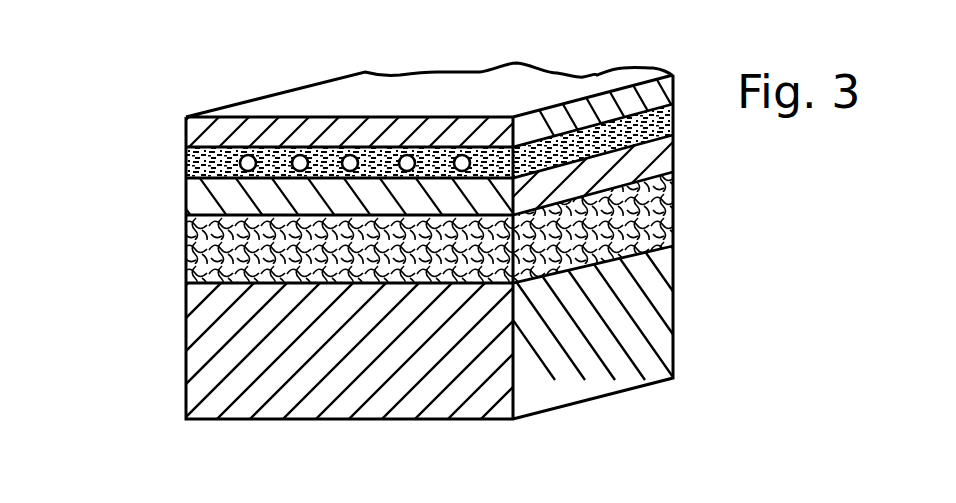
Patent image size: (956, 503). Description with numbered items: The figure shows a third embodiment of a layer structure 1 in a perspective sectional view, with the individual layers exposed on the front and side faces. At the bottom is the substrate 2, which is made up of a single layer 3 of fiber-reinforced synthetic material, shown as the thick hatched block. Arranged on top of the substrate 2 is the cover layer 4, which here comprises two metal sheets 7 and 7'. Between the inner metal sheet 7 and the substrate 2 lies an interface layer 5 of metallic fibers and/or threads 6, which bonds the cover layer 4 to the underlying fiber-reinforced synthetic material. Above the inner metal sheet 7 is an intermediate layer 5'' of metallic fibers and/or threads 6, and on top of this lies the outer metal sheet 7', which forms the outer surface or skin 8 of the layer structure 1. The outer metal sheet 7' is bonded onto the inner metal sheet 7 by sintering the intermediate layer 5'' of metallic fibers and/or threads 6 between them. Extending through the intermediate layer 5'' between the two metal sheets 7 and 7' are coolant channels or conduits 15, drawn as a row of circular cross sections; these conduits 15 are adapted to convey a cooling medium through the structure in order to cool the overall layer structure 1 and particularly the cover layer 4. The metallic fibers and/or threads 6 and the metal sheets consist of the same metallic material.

The layer structure 1 is at (592, 60).
The substrate 2 is at (186, 377).
The layer of fiber-reinforced synthetic material 3 is at (203, 323).
The cover layer 4 is at (184, 218).
The interface layer 5 is at (279, 262).
The metallic fibers and/or threads 6 is at (190, 152).
The inner metal sheet 7 is at (400, 184).
The outer metal sheet 7' is at (386, 105).
The outer surface or skin 8 is at (292, 102).
The intermediate layer 5'' is at (279, 173).
The coolant channels or conduits 15 is at (461, 155).